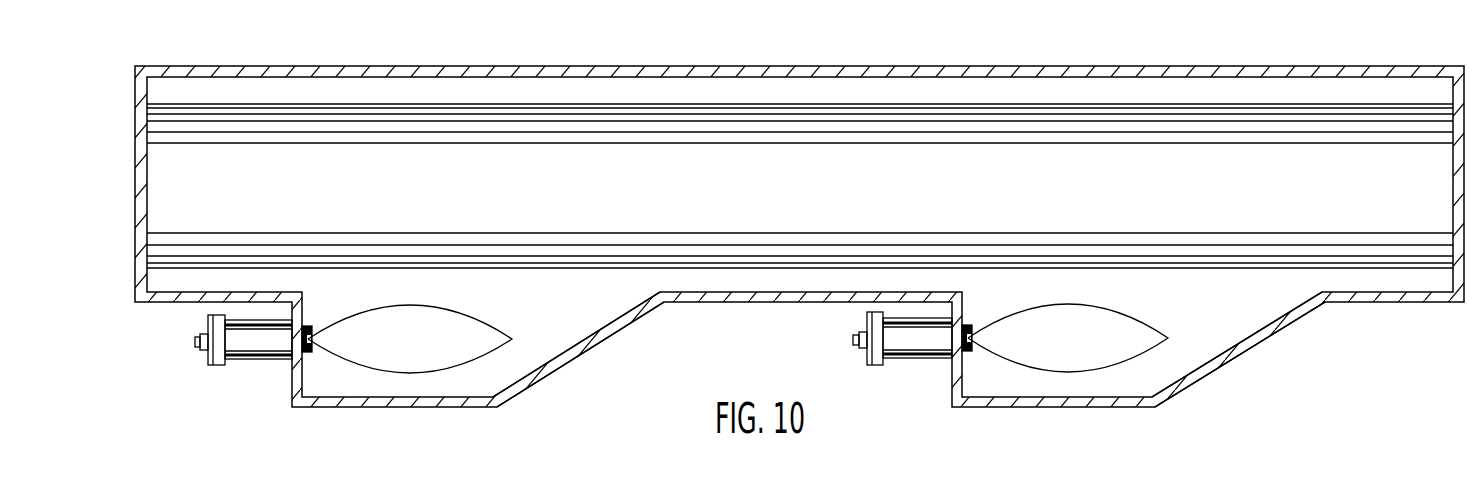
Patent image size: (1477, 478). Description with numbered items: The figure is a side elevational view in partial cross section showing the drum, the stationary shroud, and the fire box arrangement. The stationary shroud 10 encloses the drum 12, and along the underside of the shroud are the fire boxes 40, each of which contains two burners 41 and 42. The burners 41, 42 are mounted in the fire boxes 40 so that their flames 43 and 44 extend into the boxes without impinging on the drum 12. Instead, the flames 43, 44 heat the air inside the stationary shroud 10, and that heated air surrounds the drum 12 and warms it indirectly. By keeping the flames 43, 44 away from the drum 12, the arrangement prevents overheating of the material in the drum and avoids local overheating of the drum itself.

The stationary shroud 10 is at (957, 66).
The drum 12 is at (1037, 103).
The fire box 40 is at (590, 345).
The burner 41 is at (274, 362).
The burner 42 is at (932, 358).
The flame 43 is at (415, 375).
The flame 44 is at (1090, 370).